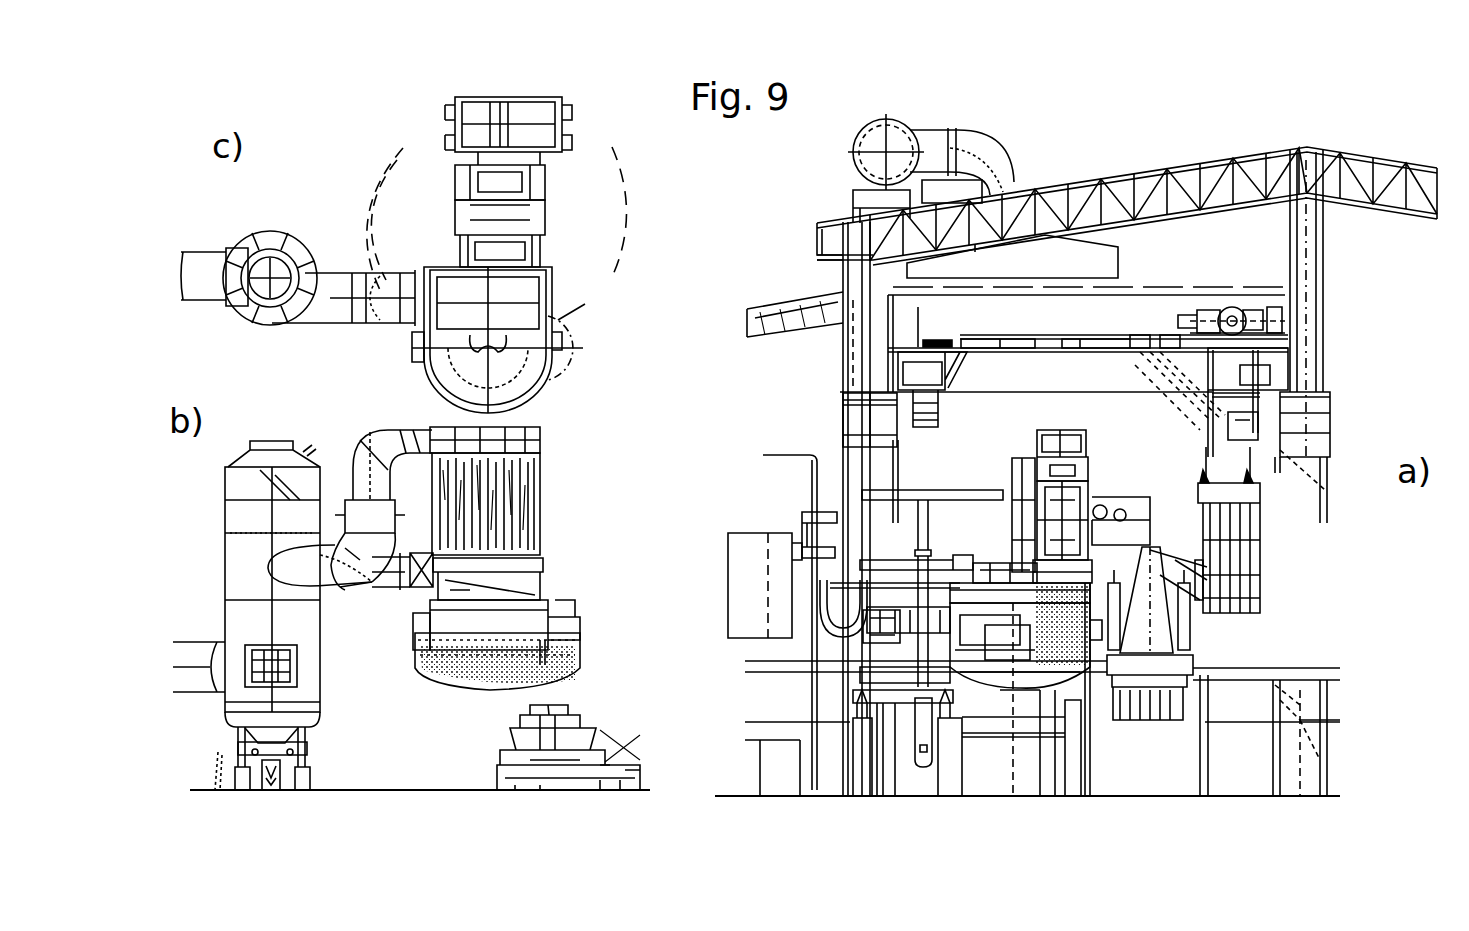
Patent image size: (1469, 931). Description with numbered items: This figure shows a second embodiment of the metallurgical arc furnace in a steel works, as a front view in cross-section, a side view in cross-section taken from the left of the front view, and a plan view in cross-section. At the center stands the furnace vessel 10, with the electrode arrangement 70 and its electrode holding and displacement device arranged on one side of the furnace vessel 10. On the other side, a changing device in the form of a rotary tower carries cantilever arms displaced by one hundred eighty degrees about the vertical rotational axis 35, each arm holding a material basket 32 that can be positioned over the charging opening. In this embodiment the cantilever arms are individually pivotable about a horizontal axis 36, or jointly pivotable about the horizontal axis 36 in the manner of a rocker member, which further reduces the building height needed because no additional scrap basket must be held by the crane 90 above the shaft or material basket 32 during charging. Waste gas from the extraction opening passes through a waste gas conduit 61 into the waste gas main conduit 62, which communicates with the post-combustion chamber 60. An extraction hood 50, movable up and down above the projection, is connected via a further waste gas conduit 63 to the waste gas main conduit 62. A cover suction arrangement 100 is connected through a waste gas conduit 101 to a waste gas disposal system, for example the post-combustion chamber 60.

The furnace vessel 10 is at (994, 696).
The material basket 32 is at (1088, 500).
The vertical rotational axis 35 is at (501, 208).
The horizontal axis 36 is at (1143, 544).
The extraction hood 50 is at (1088, 444).
The post-combustion chamber 60 is at (281, 228).
The waste gas conduit 61 is at (373, 588).
The waste gas main conduit 62 is at (333, 585).
The waste gas conduit 63 is at (373, 435).
The electrode arrangement 70 is at (955, 482).
The crane 90 is at (1186, 322).
The cover suction arrangement 100 is at (1118, 258).
The waste gas conduit 101 is at (1014, 150).